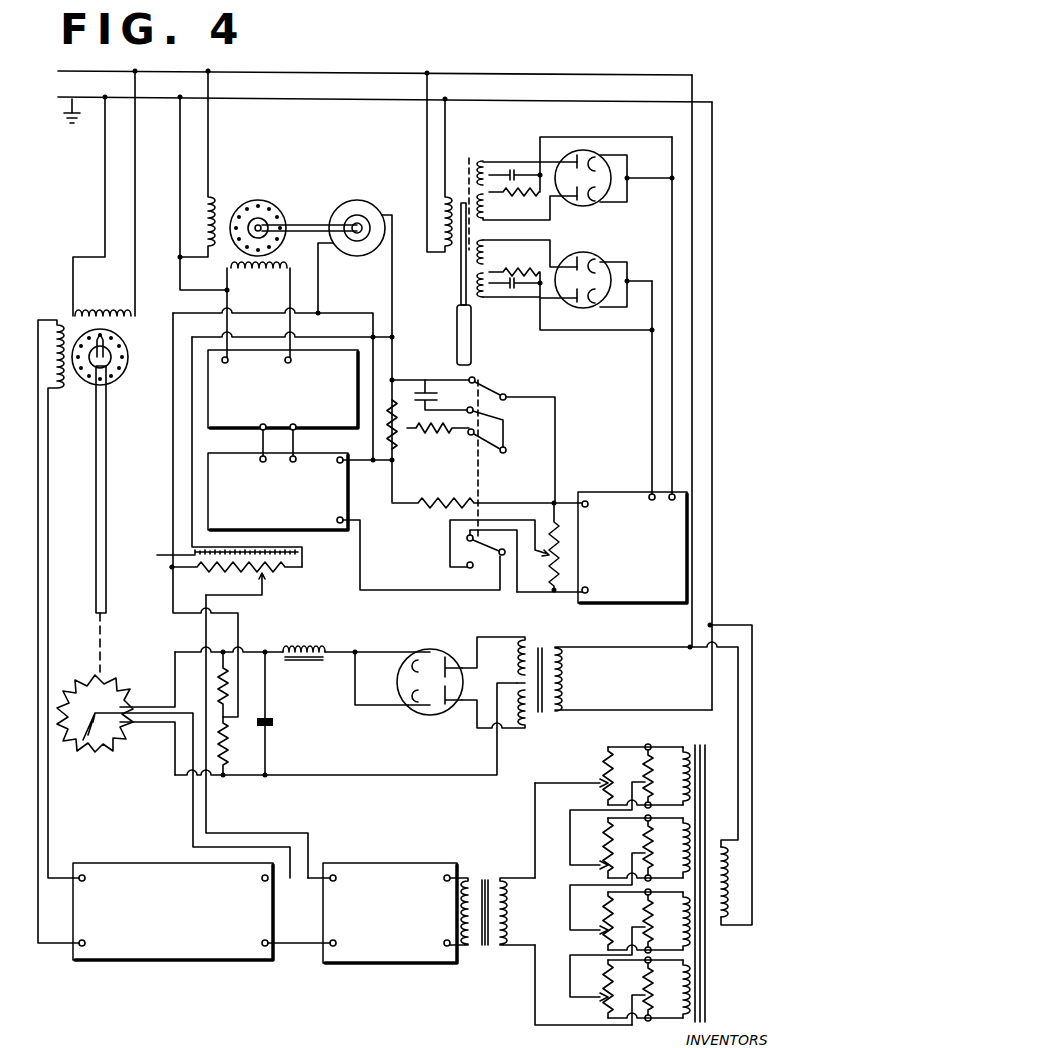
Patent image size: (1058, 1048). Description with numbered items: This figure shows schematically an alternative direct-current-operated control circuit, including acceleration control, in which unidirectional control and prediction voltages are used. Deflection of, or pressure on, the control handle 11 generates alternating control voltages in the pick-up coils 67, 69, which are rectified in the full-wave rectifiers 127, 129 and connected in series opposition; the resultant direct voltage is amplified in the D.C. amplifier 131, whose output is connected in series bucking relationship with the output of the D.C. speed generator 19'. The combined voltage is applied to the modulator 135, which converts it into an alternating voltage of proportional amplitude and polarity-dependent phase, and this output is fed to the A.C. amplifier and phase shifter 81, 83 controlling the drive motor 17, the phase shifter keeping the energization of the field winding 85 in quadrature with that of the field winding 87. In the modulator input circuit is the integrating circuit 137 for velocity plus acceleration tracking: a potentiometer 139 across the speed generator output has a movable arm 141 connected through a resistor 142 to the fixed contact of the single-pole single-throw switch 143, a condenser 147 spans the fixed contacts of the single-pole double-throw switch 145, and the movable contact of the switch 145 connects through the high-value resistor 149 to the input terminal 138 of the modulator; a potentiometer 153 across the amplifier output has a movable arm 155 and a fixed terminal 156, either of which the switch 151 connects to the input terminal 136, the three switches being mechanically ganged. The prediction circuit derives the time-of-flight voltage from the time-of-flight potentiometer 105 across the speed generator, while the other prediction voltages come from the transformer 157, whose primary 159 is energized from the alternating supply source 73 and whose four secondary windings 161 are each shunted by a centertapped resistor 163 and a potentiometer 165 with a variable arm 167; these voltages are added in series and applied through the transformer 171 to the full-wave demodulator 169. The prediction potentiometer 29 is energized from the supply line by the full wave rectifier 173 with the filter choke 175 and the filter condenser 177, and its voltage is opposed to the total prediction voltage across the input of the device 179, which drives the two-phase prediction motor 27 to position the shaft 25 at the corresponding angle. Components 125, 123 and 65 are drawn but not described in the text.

The alternating supply source 73 is at (294, 74).
The coil 125 is at (102, 310).
The field winding 87 is at (216, 208).
The drive motor 17 is at (278, 206).
The speed generator 19' is at (359, 215).
The field winding 85 is at (258, 276).
The phase shifter 81 is at (279, 401).
The A.C. amplifier 83 is at (236, 429).
The modulator 135 is at (310, 524).
The input terminal 138 is at (344, 465).
The input terminal 136 is at (338, 518).
The time-of-flight potentiometer 105 is at (277, 569).
The prediction motor 27 is at (119, 383).
The shaft 25 is at (108, 484).
The coil 123 is at (61, 390).
The prediction potentiometer 29 is at (118, 690).
The filter choke 175 is at (326, 640).
The filter condenser 177 is at (275, 722).
The full wave rectifier 173 is at (421, 650).
The primary 159 is at (731, 877).
The coil 65 is at (437, 215).
The pick-up coil 67 is at (486, 165).
The pick-up coil 69 is at (485, 296).
The control handle 11 is at (473, 345).
The full-wave rectifier 127 is at (589, 152).
The full-wave rectifier 129 is at (613, 273).
The potentiometer 139 is at (403, 391).
The condenser 147 is at (429, 392).
The single-pole double-throw switch 145 is at (493, 392).
The single-pole single-throw switch 143 is at (484, 447).
The resistor 142 is at (423, 431).
The movable arm 141 is at (403, 432).
The integrating circuit 137 is at (554, 413).
The resistor 149 is at (427, 510).
The movable arm 155 is at (543, 542).
The potentiometer 153 is at (547, 570).
The fixed terminal 156 is at (553, 593).
The switch 151 is at (493, 554).
The D.C. amplifier 131 is at (628, 594).
The device 179 is at (256, 965).
The full-wave demodulator 169 is at (362, 860).
The transformer 171 is at (482, 876).
The potentiometer 165 is at (604, 765).
The centertapped resistor 163 is at (646, 750).
The variable arm 167 is at (535, 785).
The secondary winding 161 is at (694, 770).
The transformer 157 is at (706, 990).